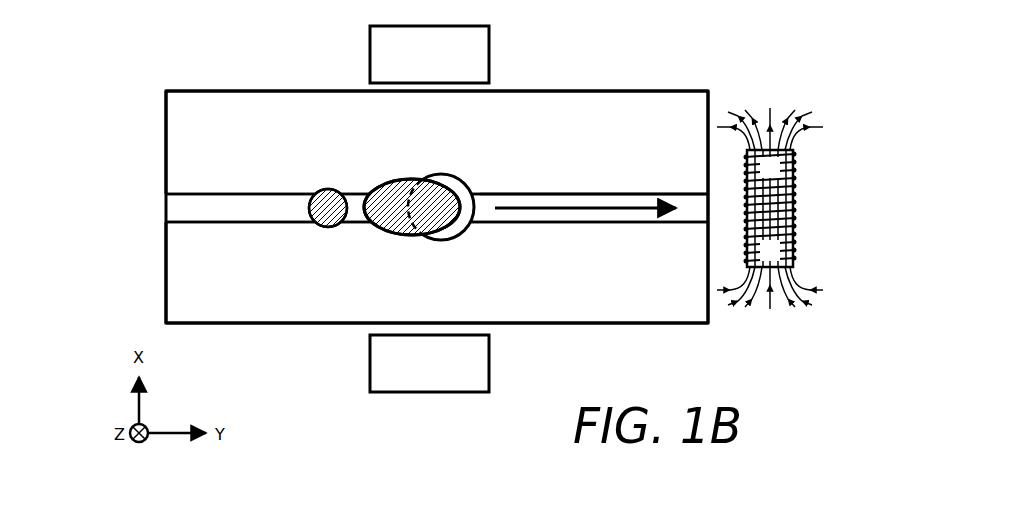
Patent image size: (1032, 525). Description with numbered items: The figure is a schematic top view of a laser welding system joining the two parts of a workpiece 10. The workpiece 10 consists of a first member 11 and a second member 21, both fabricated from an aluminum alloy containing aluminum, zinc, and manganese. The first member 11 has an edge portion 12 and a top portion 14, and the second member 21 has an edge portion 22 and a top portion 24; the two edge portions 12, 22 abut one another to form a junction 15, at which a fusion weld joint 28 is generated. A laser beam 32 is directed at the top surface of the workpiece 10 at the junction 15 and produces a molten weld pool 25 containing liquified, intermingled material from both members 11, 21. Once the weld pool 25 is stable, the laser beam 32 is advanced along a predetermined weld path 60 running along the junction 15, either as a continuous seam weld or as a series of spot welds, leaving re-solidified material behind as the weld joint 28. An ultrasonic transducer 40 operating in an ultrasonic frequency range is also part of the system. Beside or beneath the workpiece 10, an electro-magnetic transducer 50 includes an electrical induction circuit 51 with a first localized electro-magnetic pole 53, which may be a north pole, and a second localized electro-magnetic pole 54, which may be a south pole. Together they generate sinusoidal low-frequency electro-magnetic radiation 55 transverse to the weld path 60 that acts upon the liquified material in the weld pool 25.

The workpiece 10 is at (214, 82).
The second member 21 is at (192, 118).
The top portion 24 is at (166, 140).
The weld joint 28 is at (176, 206).
The edge portion 22 is at (237, 192).
The edge portion 12 is at (228, 224).
The first member 11 is at (166, 273).
The top portion 14 is at (196, 297).
The ultrasonic transducer 40 is at (316, 180).
The weld pool 25 is at (390, 192).
The laser beam 32 is at (455, 182).
The junction 15 is at (494, 188).
The weld path 60 is at (588, 207).
The second localized electro-magnetic pole 54 is at (429, 54).
The first localized electro-magnetic pole 53 is at (429, 363).
The electro-magnetic transducer 50 is at (811, 189).
The electrical induction circuit 51 is at (795, 213).
The electro-magnetic radiation 55 is at (777, 114).